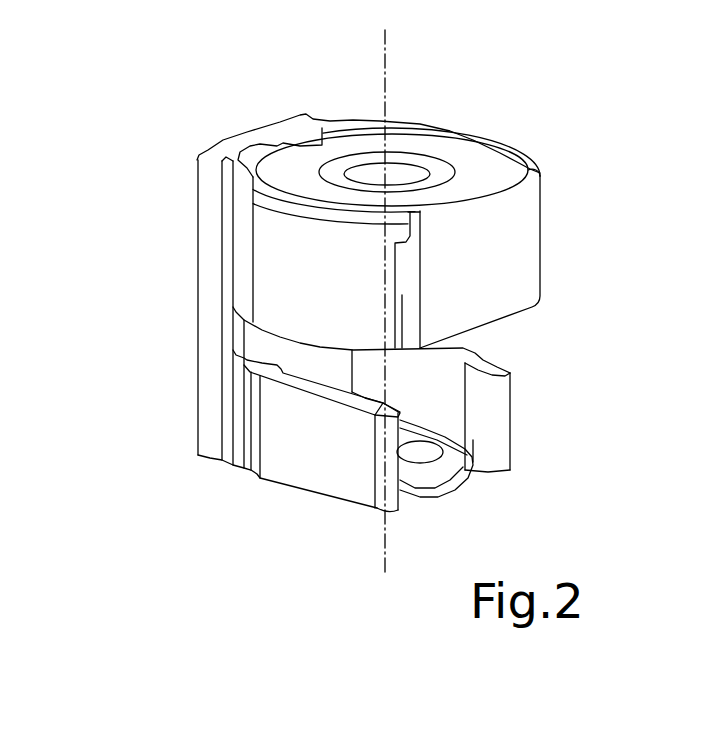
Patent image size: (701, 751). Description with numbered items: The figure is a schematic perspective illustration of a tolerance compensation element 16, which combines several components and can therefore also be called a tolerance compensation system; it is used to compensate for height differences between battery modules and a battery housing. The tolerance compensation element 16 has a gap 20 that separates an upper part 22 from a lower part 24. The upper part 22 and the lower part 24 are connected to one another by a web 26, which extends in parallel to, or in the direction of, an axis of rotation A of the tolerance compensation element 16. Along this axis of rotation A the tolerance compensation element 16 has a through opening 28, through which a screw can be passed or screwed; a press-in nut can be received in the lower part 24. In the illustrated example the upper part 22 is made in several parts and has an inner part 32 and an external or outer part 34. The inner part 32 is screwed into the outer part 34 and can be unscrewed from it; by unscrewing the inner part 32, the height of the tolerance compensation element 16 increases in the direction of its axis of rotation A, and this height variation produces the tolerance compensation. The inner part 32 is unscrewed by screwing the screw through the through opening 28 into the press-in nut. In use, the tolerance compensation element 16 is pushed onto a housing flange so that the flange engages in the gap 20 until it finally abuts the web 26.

The tolerance compensation element 16 is at (202, 100).
The gap 20 is at (502, 348).
The upper part 22 is at (538, 165).
The lower part 24 is at (512, 428).
The web 26 is at (213, 285).
The through opening 28 is at (402, 172).
The inner part 32 is at (468, 163).
The outer part 34 is at (515, 247).
The axis of rotation A is at (385, 95).